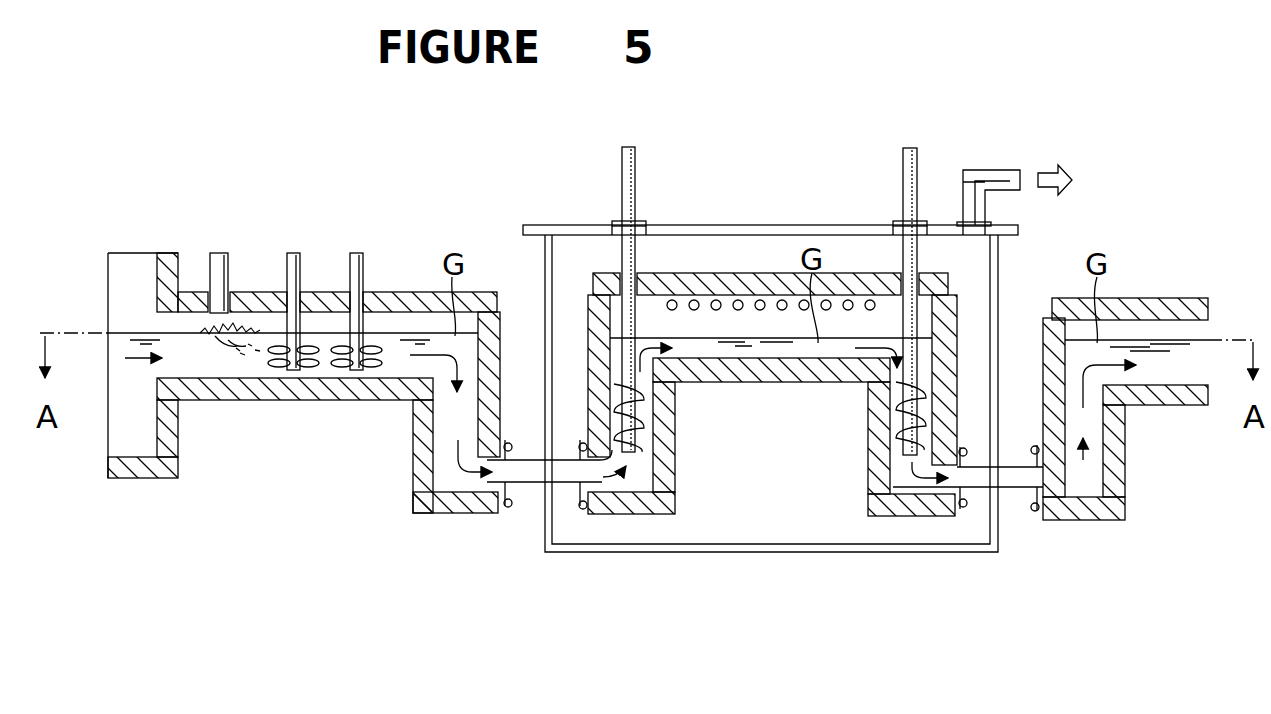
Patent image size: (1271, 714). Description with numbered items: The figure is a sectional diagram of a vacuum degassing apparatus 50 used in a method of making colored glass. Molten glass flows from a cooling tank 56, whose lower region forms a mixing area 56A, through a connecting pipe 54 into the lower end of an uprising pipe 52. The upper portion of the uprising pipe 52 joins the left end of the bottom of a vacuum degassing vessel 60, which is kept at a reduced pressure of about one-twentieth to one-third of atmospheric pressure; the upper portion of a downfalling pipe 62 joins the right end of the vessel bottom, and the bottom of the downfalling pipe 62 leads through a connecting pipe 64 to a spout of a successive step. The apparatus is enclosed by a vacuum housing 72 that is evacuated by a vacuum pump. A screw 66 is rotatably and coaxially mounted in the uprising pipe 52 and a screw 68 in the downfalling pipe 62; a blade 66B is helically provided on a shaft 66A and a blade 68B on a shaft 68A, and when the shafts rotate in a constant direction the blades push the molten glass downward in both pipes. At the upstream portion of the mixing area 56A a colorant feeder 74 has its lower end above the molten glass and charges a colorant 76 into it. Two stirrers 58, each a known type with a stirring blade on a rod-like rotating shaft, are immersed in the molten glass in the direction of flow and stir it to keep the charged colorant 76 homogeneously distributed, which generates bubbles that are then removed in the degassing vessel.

The vacuum degassing apparatus 50 is at (795, 222).
The uprising pipe 52 is at (662, 482).
The connecting pipe 54 is at (530, 486).
The cooling tank 56 is at (140, 244).
The mixing area 56A is at (312, 396).
The stirrers 58 is at (347, 266).
The vacuum degassing vessel 60 is at (698, 272).
The downfalling pipe 62 is at (870, 480).
The connecting pipe 64 is at (1018, 492).
The screw 66 is at (620, 152).
The shaft 66A is at (620, 188).
The blade 66B is at (648, 402).
The screw 68 is at (919, 165).
The shaft 68A is at (903, 203).
The blade 68B is at (898, 410).
The vacuum housing 72 is at (755, 225).
The colorant feeder 74 is at (218, 258).
The colorant 76 is at (240, 326).